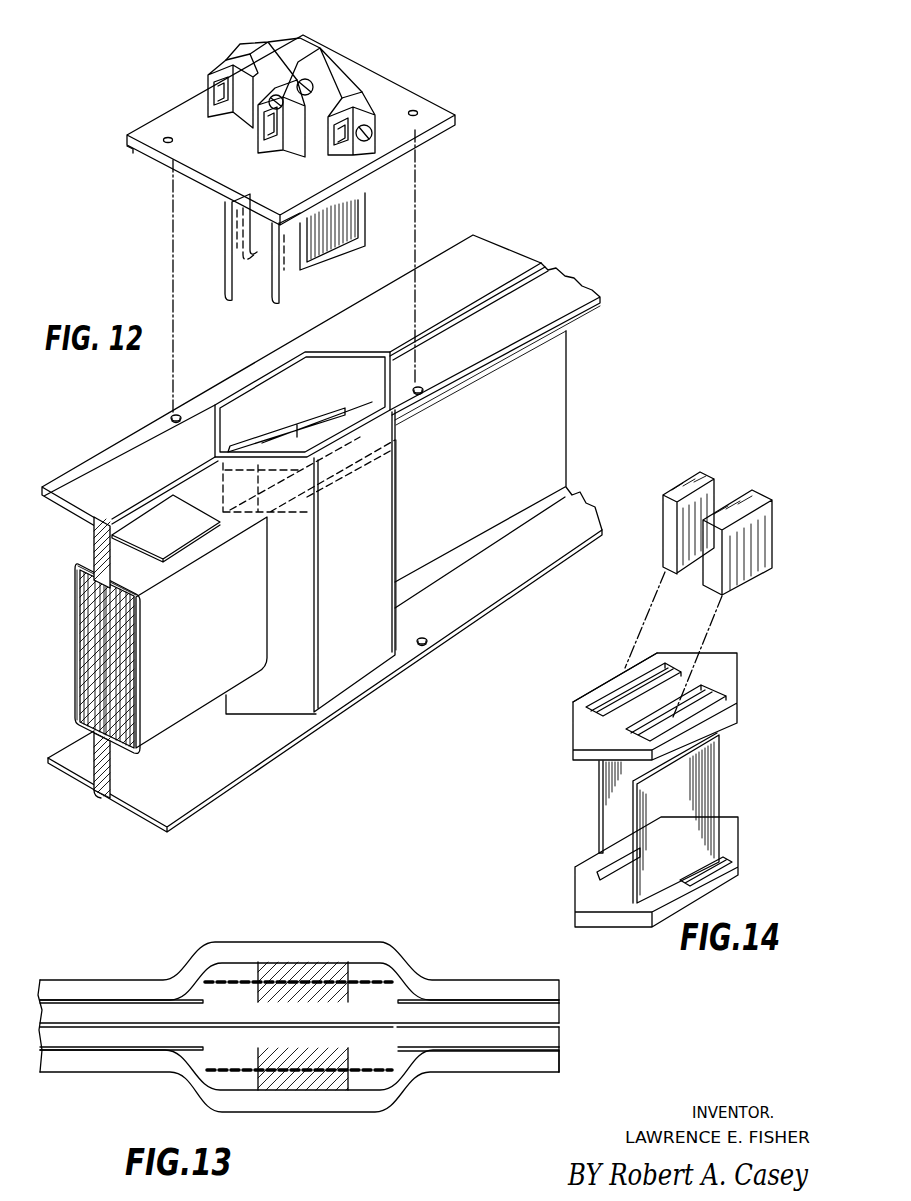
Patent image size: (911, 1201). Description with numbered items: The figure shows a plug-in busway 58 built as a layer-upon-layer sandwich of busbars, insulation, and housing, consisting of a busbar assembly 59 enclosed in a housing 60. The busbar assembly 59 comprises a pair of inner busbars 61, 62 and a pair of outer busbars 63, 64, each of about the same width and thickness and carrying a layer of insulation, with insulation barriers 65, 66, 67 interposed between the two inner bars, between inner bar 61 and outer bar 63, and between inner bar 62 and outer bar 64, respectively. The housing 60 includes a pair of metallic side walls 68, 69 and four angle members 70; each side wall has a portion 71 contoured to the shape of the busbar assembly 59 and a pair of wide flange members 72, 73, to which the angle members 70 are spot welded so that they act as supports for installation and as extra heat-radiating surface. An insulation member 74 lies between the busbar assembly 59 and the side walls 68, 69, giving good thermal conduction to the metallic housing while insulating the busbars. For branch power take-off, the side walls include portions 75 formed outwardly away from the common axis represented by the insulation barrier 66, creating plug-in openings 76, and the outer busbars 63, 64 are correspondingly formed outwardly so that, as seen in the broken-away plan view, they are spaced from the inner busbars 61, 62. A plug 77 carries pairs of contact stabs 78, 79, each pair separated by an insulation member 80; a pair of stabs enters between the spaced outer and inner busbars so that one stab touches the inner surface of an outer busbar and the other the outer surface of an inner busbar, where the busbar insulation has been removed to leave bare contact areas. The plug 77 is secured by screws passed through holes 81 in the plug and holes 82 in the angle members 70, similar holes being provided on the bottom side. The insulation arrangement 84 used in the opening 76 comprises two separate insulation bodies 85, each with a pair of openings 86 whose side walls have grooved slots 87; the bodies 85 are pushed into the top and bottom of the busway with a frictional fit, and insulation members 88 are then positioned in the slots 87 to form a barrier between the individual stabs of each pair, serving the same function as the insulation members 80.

In FIG. 12, the busway 58 is at (569, 356).
In FIG. 12, the busbar assembly 59 is at (75, 677).
In FIG. 12, the housing 60 is at (591, 294).
In FIG. 12, the inner busbar 61 is at (95, 620).
In FIG. 13, the inner busbar 61 is at (562, 1010).
In FIG. 12, the inner busbar 62 is at (108, 633).
In FIG. 13, the inner busbar 62 is at (560, 1037).
In FIG. 12, the outer busbar 63 is at (283, 444).
In FIG. 13, the outer busbar 63 is at (373, 945).
In FIG. 12, the outer busbar 64 is at (122, 650).
In FIG. 13, the outer busbar 64 is at (560, 1057).
In FIG. 12, the insulation barrier 65 is at (82, 585).
In FIG. 13, the insulation barrier 65 is at (145, 998).
In FIG. 12, the insulation barrier 66 is at (100, 694).
In FIG. 13, the insulation barrier 66 is at (114, 1022).
In FIG. 12, the insulation barrier 67 is at (118, 710).
In FIG. 13, the insulation barrier 67 is at (83, 1046).
In FIG. 12, the side wall 68 is at (75, 613).
In FIG. 12, the side wall 69 is at (218, 614).
In FIG. 12, the angle member 70 is at (158, 457).
In FIG. 12, the contoured portion 71 is at (75, 566).
In FIG. 12, the flange member 72 is at (116, 512).
In FIG. 12, the flange member 73 is at (101, 790).
In FIG. 12, the insulation member 74 is at (128, 672).
In FIG. 12, the outwardly formed portion 75 is at (377, 487).
In FIG. 12, the plug-in opening 76 is at (336, 381).
In FIG. 12, the plug 77 is at (350, 52).
In FIG. 12, the contact stab 78 is at (256, 256).
In FIG. 13, the contact stab 78 is at (251, 978).
In FIG. 12, the contact stab 79 is at (319, 272).
In FIG. 13, the contact stab 79 is at (253, 1079).
In FIG. 12, the insulation member 80 is at (225, 262).
In FIG. 13, the insulation member 80 is at (388, 980).
In FIG. 12, the hole 81 is at (167, 137).
In FIG. 12, the hole 82 is at (179, 414).
In FIG. 14, the insulator block assembly 84 is at (740, 700).
In FIG. 14, the insulation body 85 is at (738, 665).
In FIG. 14, the opening 86 is at (619, 690).
In FIG. 14, the grooved slot 87 is at (713, 698).
In FIG. 14, the insulation member 88 is at (633, 806).